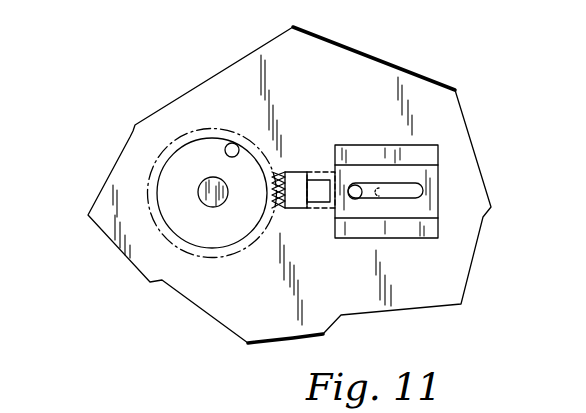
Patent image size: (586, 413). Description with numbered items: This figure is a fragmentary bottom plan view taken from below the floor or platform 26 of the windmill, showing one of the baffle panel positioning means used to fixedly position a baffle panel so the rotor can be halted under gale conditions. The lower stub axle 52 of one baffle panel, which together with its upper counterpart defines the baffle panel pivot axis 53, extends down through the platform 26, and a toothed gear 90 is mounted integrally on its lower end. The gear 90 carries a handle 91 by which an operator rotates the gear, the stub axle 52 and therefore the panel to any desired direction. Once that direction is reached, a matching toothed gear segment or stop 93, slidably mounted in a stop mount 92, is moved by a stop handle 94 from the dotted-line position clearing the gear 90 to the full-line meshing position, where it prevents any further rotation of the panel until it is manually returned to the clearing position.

The platform 26 is at (197, 293).
The stub axle 52 is at (214, 207).
The baffle panel pivot axis 53 is at (205, 202).
The toothed gear 90 is at (183, 188).
The handle 91 is at (227, 143).
The stop mount 92 is at (377, 153).
The toothed gear segment or stop 93 is at (288, 176).
The stop handle 94 is at (355, 199).